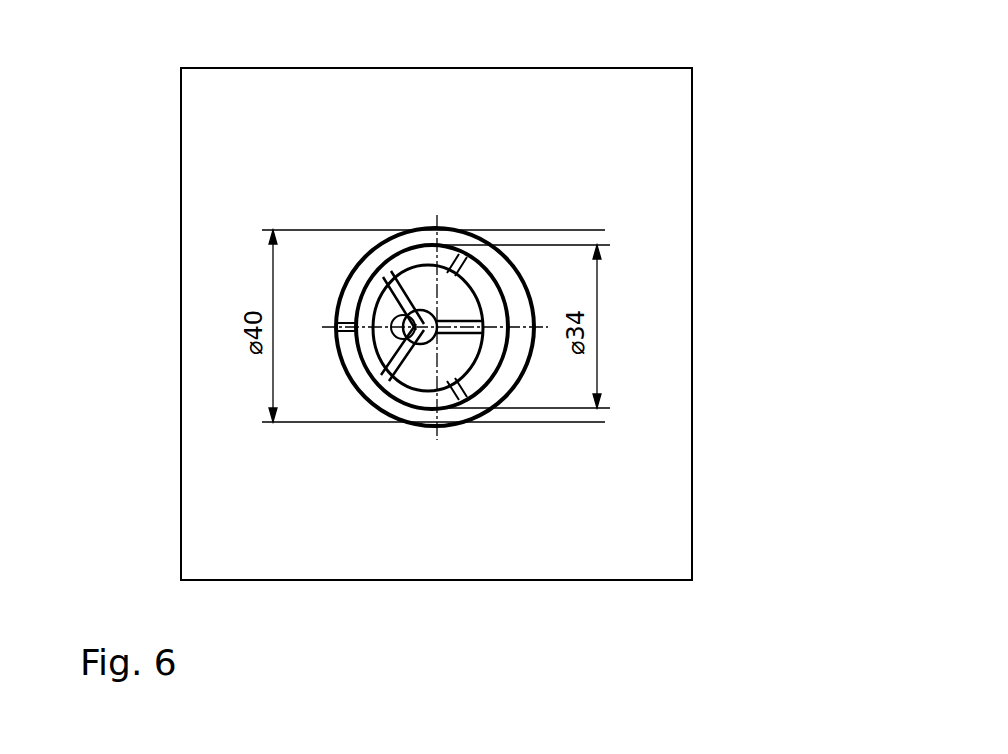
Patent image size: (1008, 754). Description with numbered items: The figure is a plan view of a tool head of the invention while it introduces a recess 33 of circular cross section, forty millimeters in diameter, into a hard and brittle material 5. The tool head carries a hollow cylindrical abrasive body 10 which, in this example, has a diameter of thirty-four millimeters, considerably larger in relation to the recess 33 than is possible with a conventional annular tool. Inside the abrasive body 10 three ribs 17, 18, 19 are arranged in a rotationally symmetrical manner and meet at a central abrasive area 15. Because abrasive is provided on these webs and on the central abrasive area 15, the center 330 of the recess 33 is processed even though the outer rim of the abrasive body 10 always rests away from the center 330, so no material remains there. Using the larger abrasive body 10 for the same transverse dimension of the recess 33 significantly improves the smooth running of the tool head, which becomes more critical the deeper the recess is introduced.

The hard and brittle material 5 is at (693, 233).
The abrasive body 10 is at (400, 235).
The recess 33 is at (457, 250).
The rib 19 is at (477, 307).
The rib 18 is at (400, 303).
The rib 17 is at (397, 353).
The central abrasive area 15 is at (414, 347).
The center of recess 330 is at (467, 337).